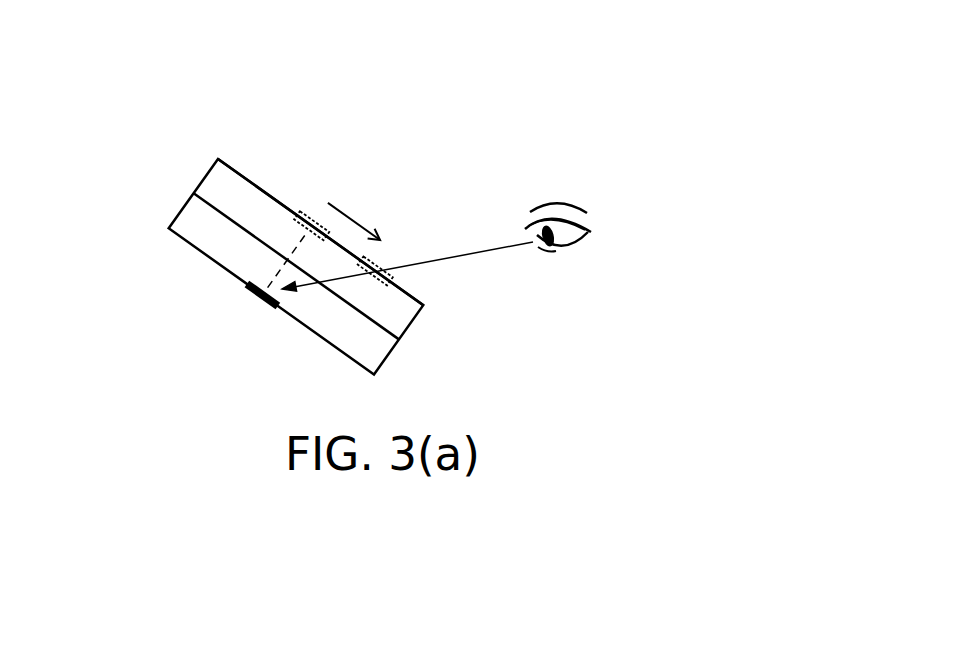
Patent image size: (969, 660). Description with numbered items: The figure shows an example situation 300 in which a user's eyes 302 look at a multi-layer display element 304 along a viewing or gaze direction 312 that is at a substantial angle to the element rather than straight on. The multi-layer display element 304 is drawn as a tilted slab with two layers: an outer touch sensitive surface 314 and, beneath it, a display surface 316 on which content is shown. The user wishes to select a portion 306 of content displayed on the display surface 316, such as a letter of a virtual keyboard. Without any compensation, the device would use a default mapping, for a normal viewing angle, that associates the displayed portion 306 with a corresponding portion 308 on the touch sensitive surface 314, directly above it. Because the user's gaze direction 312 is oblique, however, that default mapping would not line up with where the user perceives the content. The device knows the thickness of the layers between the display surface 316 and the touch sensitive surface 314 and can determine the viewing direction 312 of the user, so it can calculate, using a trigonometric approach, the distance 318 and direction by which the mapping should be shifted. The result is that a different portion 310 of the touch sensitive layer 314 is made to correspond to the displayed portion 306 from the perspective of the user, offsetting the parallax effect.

The example situation 300 is at (818, 110).
The user's eyes 302 is at (608, 222).
The multi-layer display element 304 is at (207, 177).
The portion of content displayed on display surface 306 is at (250, 298).
The corresponding portion on touch sensitive surface 308 is at (310, 212).
The portion of touch sensitive layer 310 is at (385, 262).
The viewing or gaze direction 312 is at (457, 257).
The touch sensitive surface 314 is at (235, 170).
The display surface 316 is at (177, 235).
The distance 318 is at (355, 217).